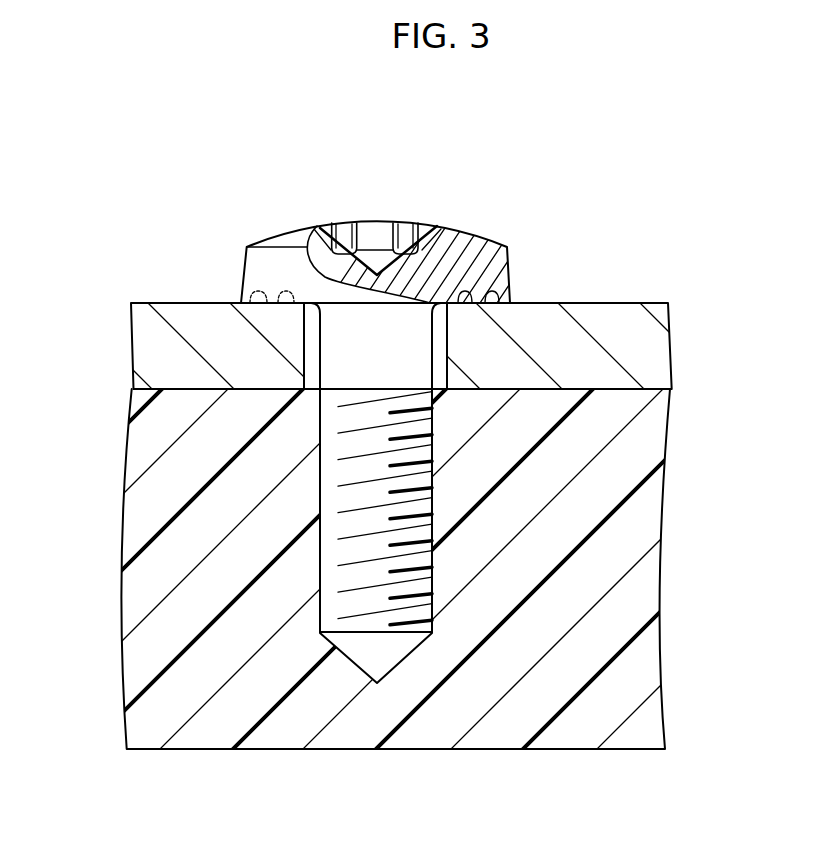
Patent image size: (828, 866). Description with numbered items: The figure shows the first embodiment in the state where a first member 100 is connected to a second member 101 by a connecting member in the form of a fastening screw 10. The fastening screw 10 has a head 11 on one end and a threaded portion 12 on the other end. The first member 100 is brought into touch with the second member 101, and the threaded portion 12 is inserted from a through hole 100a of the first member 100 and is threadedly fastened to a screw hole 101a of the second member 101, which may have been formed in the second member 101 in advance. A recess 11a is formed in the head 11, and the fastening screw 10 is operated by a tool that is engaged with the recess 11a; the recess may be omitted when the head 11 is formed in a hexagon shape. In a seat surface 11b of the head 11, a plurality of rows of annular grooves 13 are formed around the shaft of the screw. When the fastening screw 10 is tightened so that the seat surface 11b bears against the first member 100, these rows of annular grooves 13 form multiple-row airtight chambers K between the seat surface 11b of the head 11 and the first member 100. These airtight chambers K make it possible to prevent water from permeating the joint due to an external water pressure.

The fastening screw 10 is at (408, 393).
The head 11 is at (276, 258).
The recess 11a is at (373, 242).
The seat surface 11b is at (282, 305).
The threaded portion 12 is at (333, 558).
The annular grooves 13 is at (486, 284).
The airtight chambers K is at (464, 305).
The first member 100 is at (396, 309).
The through hole 100a is at (447, 342).
The second member 101 is at (414, 597).
The screw hole 101a is at (432, 500).